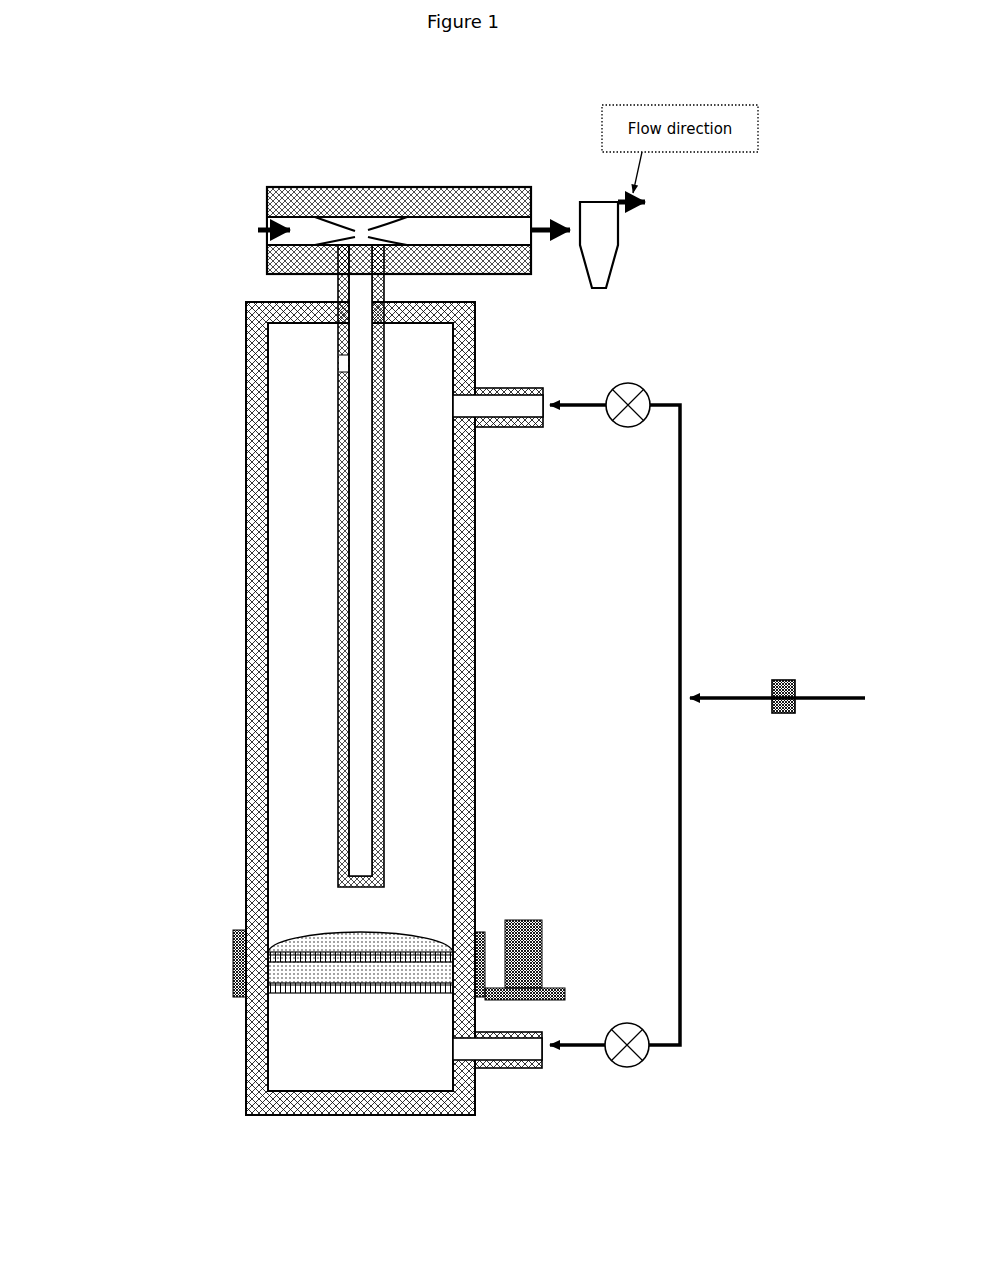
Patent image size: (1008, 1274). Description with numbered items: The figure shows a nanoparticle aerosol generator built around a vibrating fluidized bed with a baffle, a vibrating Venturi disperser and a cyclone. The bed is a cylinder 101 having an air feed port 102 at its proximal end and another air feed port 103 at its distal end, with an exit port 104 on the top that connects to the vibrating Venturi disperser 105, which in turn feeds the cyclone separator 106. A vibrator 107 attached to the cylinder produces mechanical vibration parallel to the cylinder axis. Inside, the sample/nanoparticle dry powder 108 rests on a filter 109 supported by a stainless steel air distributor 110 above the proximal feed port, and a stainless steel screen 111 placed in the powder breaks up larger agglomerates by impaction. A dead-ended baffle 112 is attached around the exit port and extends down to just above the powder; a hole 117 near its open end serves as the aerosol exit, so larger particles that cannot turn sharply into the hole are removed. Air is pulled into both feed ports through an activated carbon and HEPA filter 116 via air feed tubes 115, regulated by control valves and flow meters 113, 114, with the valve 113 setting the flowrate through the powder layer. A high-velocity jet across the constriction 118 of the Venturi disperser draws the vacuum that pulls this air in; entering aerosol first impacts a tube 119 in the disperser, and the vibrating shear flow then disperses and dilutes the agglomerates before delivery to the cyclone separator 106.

The cylinder 101 is at (253, 568).
The proximal end air feed port 102 is at (497, 1033).
The distal end air feed port 103 is at (460, 397).
The exit port 104 is at (363, 288).
The vibrating Venturi disperser 105 is at (283, 258).
The cyclone separator 106 is at (600, 243).
The vibrator 107 is at (522, 958).
The sample/nanoparticle dry powder 108 is at (313, 930).
The filter 109 is at (313, 976).
The stainless steel air distributor 110 is at (272, 990).
The stainless steel screen 111 is at (363, 965).
The baffle 112 is at (365, 677).
The control valve and flow meter 113 is at (636, 1032).
The control valve and flow meter 114 is at (652, 410).
The air feed tubes 115 is at (684, 458).
The activated carbon and HEPA filter 116 is at (788, 677).
The hole 117 is at (357, 369).
The constriction 118 is at (347, 223).
The tube 119 is at (385, 225).